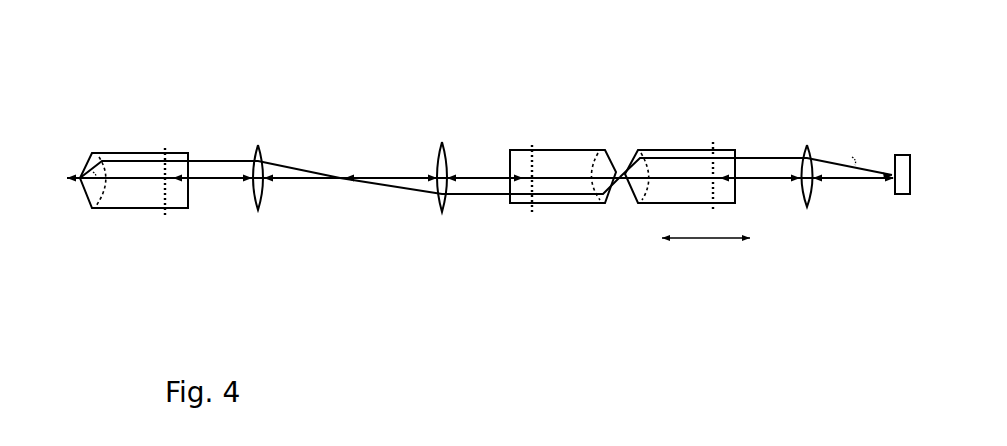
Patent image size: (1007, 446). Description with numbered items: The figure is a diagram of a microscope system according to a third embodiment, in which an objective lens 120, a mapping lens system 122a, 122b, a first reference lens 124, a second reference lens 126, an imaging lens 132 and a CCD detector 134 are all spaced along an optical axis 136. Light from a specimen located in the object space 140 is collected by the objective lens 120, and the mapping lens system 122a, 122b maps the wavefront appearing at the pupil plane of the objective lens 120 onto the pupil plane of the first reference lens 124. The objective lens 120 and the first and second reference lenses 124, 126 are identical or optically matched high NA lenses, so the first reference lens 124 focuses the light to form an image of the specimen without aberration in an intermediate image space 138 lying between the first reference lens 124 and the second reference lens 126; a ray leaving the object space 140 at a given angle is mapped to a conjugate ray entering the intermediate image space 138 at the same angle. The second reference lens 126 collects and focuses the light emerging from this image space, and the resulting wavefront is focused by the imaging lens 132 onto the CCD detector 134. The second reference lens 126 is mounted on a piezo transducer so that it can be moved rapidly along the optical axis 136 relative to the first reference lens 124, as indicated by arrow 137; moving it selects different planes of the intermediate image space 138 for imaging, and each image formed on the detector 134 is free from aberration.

The objective lens 120 is at (141, 200).
The object space 140 is at (71, 188).
The mapping lens system 122a is at (258, 210).
The mapping lens system 122b is at (440, 203).
The optical axis 136 is at (405, 176).
The first reference lens 124 is at (557, 152).
The intermediate image space 138 is at (620, 190).
The second reference lens 126 is at (693, 148).
The arrow 137 is at (710, 240).
The imaging lens 132 is at (807, 148).
The CCD detector 134 is at (902, 155).